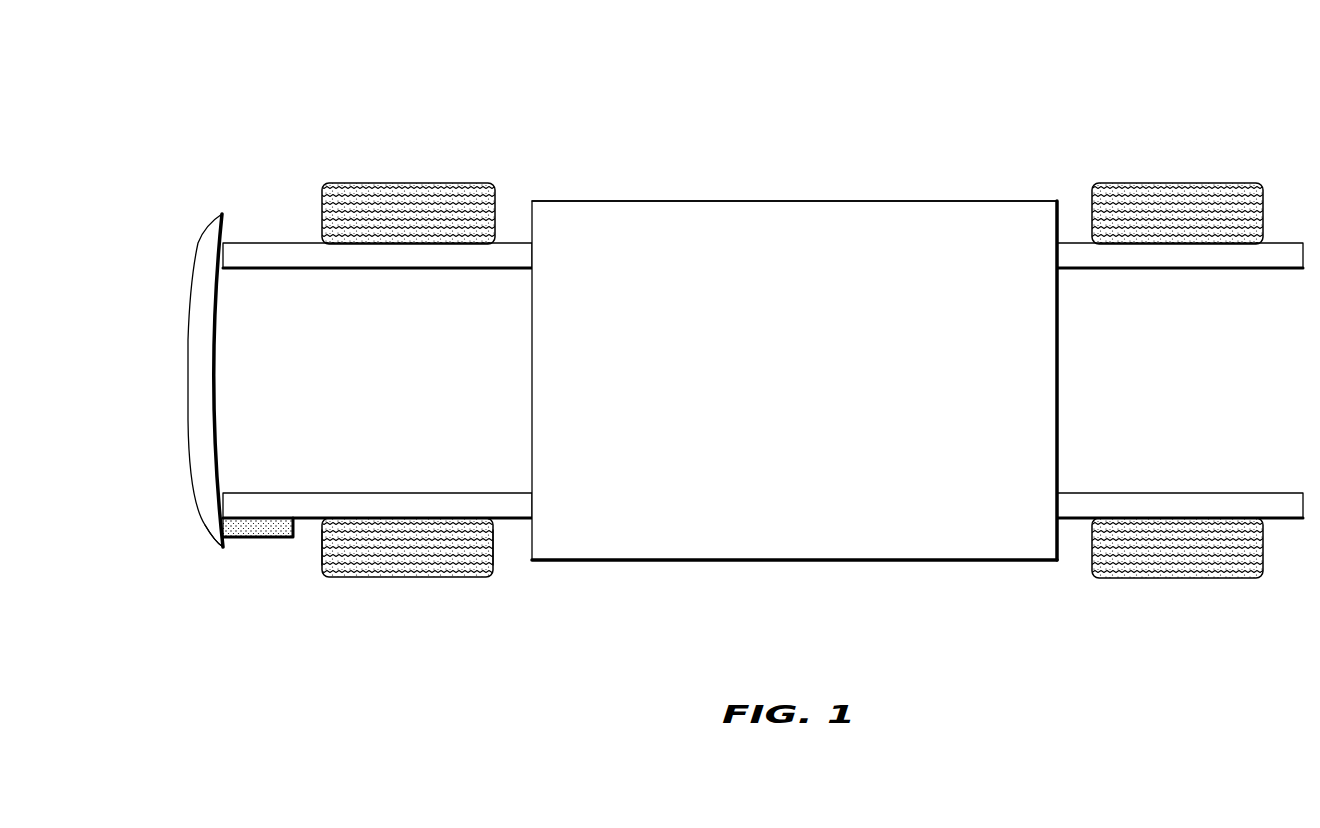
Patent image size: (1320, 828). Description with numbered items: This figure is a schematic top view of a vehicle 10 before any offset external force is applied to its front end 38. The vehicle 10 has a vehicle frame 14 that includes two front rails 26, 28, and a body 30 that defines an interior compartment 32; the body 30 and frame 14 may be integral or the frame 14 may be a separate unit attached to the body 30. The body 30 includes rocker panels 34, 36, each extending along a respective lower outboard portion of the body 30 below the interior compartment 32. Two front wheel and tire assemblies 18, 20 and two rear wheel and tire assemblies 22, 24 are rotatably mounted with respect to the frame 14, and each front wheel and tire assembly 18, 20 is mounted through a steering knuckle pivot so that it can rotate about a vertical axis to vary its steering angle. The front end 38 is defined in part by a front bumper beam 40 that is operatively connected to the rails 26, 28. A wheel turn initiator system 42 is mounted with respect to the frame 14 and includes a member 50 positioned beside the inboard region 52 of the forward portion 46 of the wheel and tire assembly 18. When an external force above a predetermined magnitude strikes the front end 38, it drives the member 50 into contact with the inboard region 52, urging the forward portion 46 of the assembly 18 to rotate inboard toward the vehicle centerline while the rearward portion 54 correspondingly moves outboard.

The vehicle 10 is at (203, 110).
The vehicle frame 14 is at (763, 336).
The front wheel and tire assembly 18 is at (480, 577).
The front wheel and tire assembly 20 is at (408, 183).
The rear wheel and tire assembly 22 is at (1178, 578).
The rear wheel and tire assembly 24 is at (1180, 184).
The front rail 26 is at (373, 492).
The front rail 28 is at (380, 270).
The body 30 is at (1058, 380).
The interior compartment 32 is at (846, 382).
The rocker panel 34 is at (793, 561).
The rocker panel 36 is at (768, 200).
The front end 38 is at (168, 423).
The front bumper beam 40 is at (188, 312).
The wheel turn initiator system 42 is at (240, 538).
The forward portion 46 is at (327, 577).
The member 50 is at (278, 538).
The inboard region 52 is at (322, 528).
The rearward portion 54 is at (490, 577).